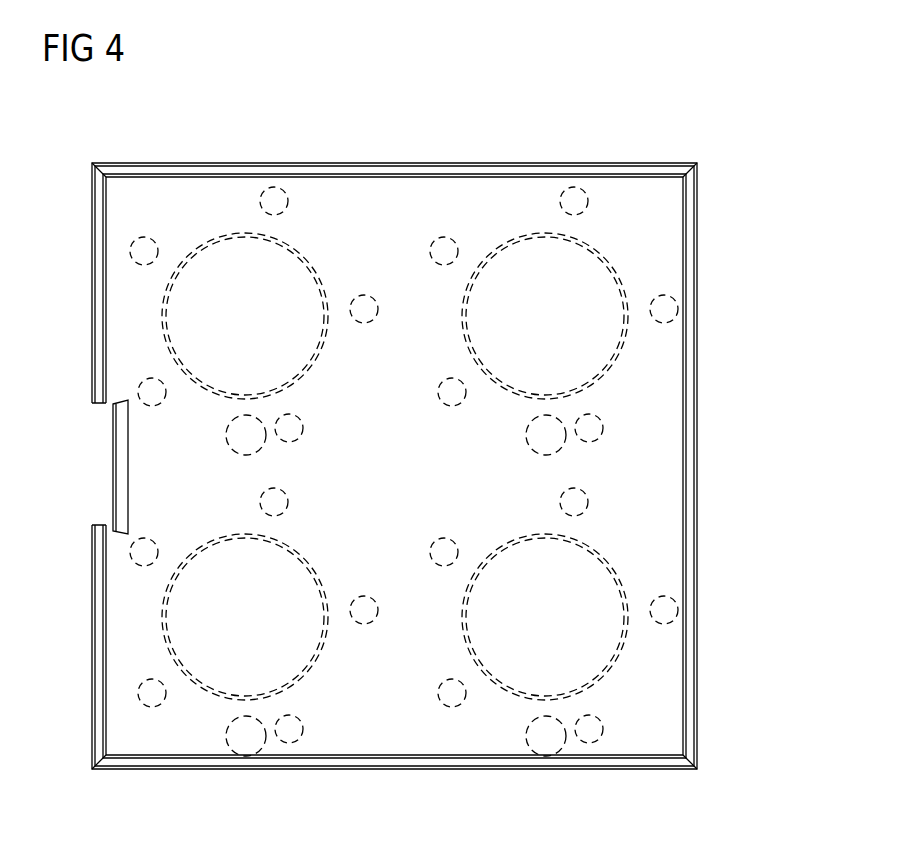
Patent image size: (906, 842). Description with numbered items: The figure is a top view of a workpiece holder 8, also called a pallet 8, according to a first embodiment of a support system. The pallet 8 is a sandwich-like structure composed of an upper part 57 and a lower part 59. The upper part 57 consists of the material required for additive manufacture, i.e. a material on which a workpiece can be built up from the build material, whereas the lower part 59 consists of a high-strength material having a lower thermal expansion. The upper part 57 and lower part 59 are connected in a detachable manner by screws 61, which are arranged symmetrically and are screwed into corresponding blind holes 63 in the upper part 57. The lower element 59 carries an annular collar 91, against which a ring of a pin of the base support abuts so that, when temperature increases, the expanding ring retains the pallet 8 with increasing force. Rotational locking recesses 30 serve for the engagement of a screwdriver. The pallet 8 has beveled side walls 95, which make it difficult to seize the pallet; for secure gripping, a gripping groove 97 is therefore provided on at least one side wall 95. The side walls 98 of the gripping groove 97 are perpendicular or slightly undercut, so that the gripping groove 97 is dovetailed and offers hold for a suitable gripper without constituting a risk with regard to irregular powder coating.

The workpiece holder 8 is at (660, 128).
The rotational locking recess 30 is at (246, 433).
The upper part 57 is at (688, 400).
The lower part 59 is at (697, 467).
The screw 61 is at (664, 623).
The blind hole 63 is at (590, 744).
The annular collar 91 is at (612, 567).
The beveled side wall 95 is at (268, 163).
The gripping groove 97 is at (127, 483).
The side wall of gripping groove 98 is at (110, 405).